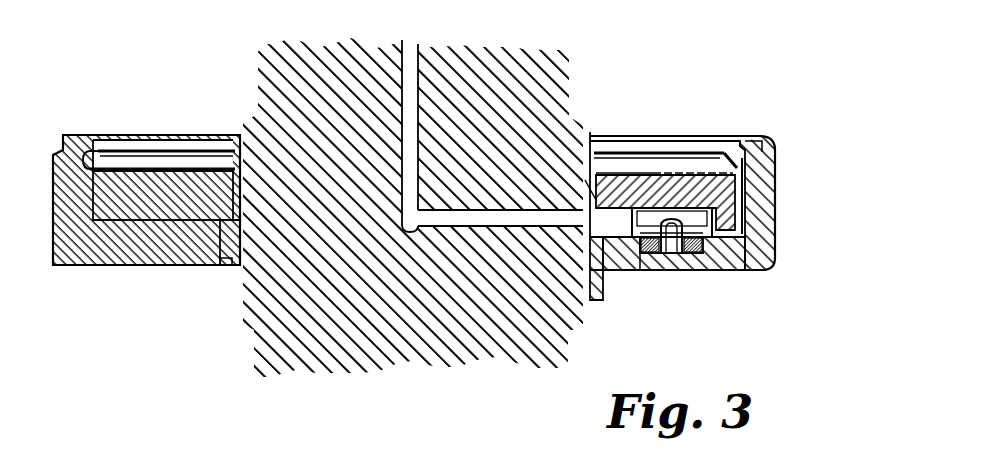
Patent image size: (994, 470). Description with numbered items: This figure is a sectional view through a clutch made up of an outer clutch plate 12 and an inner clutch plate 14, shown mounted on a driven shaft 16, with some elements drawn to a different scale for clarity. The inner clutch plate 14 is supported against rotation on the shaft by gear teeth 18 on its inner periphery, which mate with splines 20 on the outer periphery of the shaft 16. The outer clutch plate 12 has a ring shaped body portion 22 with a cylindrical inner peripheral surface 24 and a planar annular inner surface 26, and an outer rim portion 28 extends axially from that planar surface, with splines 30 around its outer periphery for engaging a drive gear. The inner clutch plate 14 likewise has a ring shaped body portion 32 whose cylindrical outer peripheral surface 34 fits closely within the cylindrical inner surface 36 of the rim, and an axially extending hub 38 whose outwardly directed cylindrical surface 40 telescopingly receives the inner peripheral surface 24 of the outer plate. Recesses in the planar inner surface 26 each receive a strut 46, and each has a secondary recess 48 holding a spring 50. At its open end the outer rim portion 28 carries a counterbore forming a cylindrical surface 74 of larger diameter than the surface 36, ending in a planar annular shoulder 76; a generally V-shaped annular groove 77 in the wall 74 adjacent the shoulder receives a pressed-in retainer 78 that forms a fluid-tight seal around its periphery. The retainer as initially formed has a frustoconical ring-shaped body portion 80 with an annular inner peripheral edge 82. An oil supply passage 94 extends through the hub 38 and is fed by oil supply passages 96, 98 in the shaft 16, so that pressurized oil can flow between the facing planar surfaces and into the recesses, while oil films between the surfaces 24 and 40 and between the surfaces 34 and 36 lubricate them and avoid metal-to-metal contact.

The outer clutch plate 12 is at (753, 273).
The inner clutch plate 14 is at (203, 150).
The driven shaft 16 is at (563, 68).
The gear teeth 18 is at (637, 162).
The splines 20 is at (597, 157).
The ring shaped body portion 22 is at (699, 271).
The cylindrical inner peripheral surface 24 is at (227, 267).
The planar annular inner surface 26 is at (652, 272).
The outer rim portion 28 is at (777, 160).
The splines 30 is at (772, 202).
The ring shaped body portion 32 is at (693, 158).
The cylindrical outer peripheral surface 34 is at (741, 211).
The cylindrical inner surface 36 is at (744, 178).
The hub 38 is at (593, 287).
The cylindrical surface 40 is at (217, 230).
The strut 46 is at (712, 232).
The secondary recess 48 is at (678, 272).
The spring 50 is at (680, 250).
The cylindrical surface 74 is at (728, 150).
The planar annular shoulder 76 is at (92, 152).
The annular groove 77 is at (756, 141).
The retainer 78 is at (143, 152).
The frustoconical ring-shaped body portion 80 is at (118, 167).
The annular inner peripheral edge 82 is at (181, 168).
The oil supply passage 94 is at (663, 165).
The oil supply passage 96 is at (412, 58).
The oil supply passage 98 is at (541, 204).